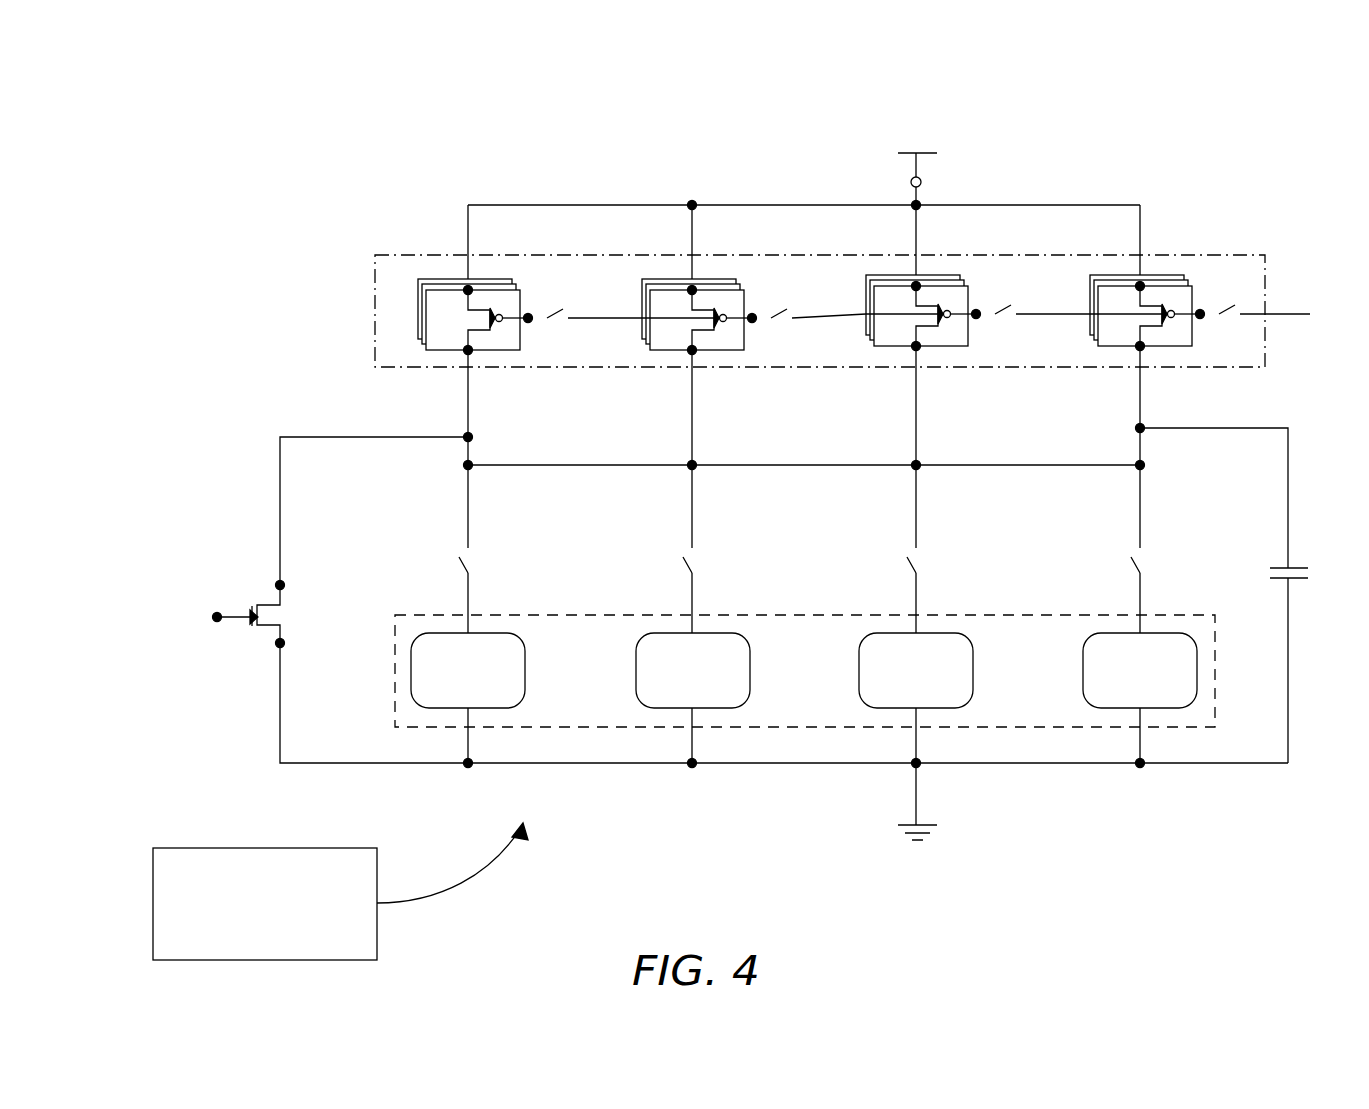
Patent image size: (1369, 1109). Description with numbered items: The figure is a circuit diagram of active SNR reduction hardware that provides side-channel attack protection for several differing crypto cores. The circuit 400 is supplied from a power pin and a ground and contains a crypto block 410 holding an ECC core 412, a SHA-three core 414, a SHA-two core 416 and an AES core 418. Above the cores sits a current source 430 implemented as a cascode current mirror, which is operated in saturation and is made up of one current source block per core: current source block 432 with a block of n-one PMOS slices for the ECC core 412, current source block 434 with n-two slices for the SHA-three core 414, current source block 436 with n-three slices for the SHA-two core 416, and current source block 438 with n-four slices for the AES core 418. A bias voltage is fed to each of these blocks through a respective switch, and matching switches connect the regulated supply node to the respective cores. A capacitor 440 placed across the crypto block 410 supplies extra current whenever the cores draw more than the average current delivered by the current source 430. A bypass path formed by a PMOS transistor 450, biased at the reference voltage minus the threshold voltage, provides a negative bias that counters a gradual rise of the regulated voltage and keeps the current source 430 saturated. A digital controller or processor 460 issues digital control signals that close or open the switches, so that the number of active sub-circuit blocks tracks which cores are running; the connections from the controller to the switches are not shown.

The circuit 400 is at (126, 123).
The current source 430 is at (362, 310).
The current source block 438 is at (447, 278).
The current source block 436 is at (674, 278).
The current source block 434 is at (897, 274).
The current source block 432 is at (1121, 274).
The PMOS transistor 450 is at (243, 610).
The capacitor 440 is at (1284, 566).
The crypto block 410 is at (395, 692).
The AES-128 core 418 is at (440, 632).
The SHA-2 core 416 is at (664, 632).
The SHA-3 core 414 is at (888, 632).
The ECC core 412 is at (1114, 632).
The digital controller or processor 460 is at (182, 853).